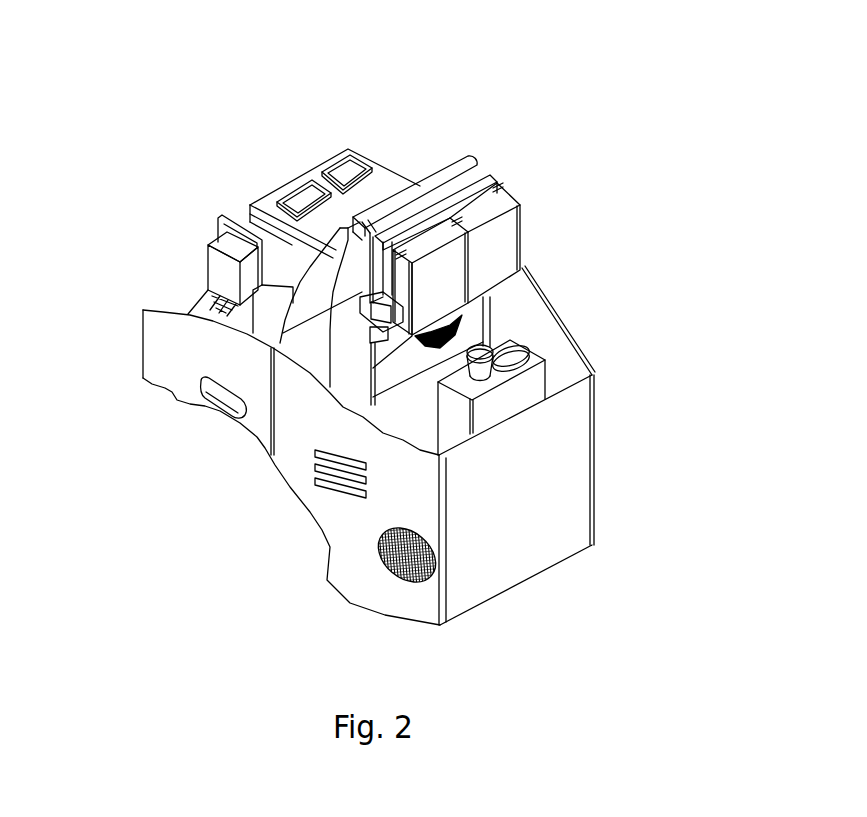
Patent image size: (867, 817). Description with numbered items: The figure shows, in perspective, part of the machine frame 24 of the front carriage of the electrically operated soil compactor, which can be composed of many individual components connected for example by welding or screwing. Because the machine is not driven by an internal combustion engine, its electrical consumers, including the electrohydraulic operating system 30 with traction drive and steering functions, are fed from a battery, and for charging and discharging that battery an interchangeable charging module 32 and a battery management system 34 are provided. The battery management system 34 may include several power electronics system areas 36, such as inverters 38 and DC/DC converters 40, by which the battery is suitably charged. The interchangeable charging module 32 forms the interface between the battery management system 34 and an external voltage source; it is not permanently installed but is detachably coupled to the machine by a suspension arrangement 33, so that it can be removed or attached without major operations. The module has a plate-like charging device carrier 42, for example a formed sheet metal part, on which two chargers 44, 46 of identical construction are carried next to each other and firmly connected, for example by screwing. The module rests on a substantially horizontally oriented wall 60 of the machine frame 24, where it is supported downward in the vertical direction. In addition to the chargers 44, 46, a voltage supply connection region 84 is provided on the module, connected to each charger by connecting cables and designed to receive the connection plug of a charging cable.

The machine frame 24 is at (593, 512).
The electrohydraulic operating system 30 is at (562, 360).
The interchangeable charging module 32 is at (500, 147).
The suspension arrangement 33 is at (385, 202).
The battery management system 34 is at (177, 215).
The power electronics system areas 36 is at (275, 145).
The inverter 38 is at (207, 263).
The DC/DC converter 40 is at (340, 163).
The charging device carrier 42 is at (490, 170).
The charger 44 is at (447, 292).
The charger 46 is at (520, 230).
The horizontally oriented wall 60 is at (418, 175).
The voltage supply connection region 84 is at (338, 285).